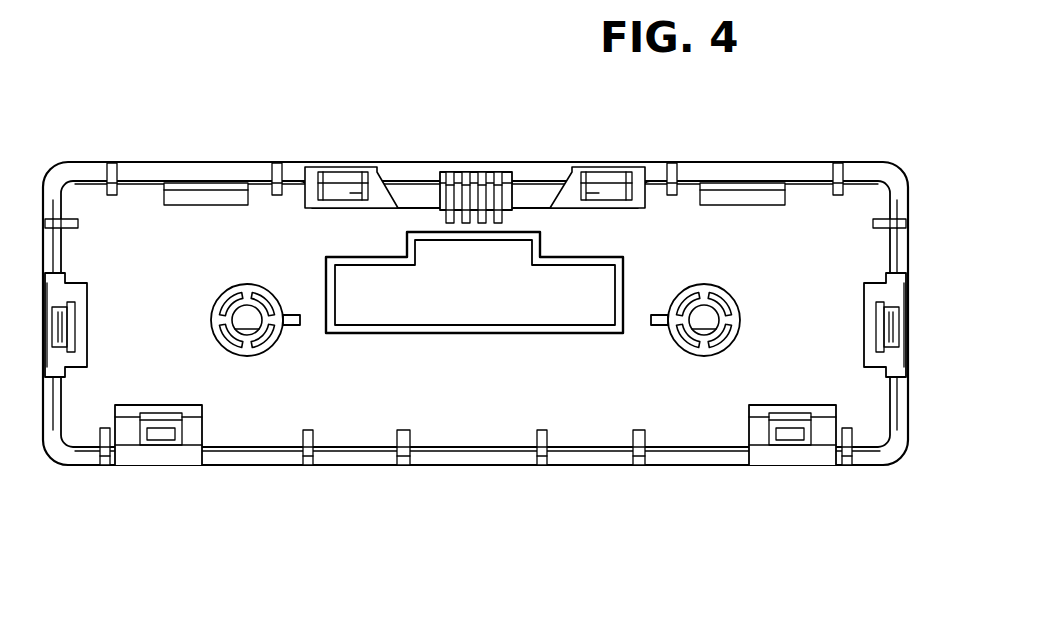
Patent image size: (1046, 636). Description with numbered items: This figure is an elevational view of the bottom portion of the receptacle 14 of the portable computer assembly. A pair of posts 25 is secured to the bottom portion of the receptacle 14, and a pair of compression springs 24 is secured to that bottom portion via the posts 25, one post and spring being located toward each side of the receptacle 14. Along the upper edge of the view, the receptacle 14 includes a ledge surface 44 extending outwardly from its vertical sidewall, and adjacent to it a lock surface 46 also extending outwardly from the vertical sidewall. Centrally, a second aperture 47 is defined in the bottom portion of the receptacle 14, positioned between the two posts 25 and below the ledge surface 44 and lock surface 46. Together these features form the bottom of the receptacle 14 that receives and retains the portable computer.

The receptacle 14 is at (196, 163).
The compression springs 24 is at (258, 340).
The posts 25 is at (222, 298).
The ledge surface 44 is at (442, 178).
The lock surface 46 is at (513, 178).
The second aperture 47 is at (478, 323).